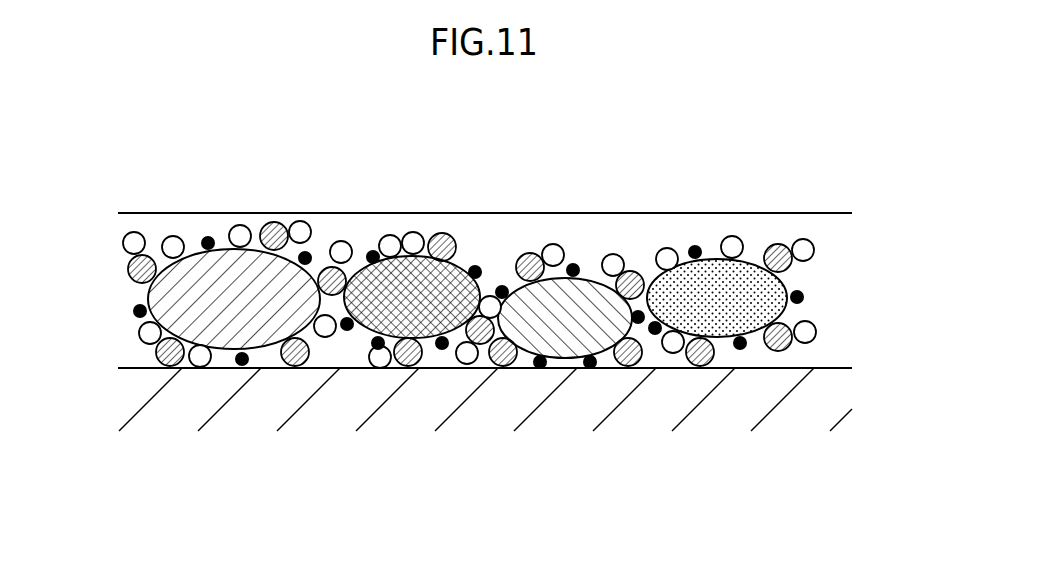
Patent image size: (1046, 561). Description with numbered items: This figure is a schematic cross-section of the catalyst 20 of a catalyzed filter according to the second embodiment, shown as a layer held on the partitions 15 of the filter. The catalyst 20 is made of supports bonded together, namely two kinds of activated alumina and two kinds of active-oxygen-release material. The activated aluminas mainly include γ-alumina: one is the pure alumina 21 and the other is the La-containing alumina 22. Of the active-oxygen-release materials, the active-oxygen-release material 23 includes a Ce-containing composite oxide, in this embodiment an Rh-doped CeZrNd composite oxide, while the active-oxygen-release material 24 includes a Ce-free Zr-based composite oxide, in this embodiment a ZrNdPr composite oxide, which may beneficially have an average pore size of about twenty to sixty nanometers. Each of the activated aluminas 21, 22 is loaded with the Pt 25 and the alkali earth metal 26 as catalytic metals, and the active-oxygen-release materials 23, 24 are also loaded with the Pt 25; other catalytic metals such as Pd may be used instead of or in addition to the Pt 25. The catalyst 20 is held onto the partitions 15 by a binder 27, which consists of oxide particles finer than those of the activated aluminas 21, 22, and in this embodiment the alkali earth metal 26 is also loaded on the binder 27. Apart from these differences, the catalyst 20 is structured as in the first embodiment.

The partitions 15 is at (808, 417).
The catalyst 20 is at (828, 302).
The pure alumina 21 is at (753, 259).
The La-containing alumina 22 is at (217, 249).
The active-oxygen-release material 23 is at (590, 278).
The active-oxygen-release material 24 is at (467, 256).
The Pt 25 is at (201, 240).
The alkali earth metal 26 is at (123, 243).
The binder 27 is at (128, 267).